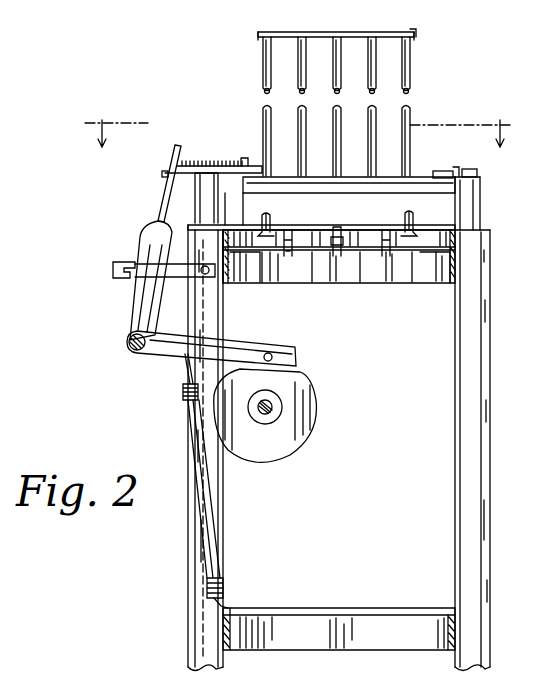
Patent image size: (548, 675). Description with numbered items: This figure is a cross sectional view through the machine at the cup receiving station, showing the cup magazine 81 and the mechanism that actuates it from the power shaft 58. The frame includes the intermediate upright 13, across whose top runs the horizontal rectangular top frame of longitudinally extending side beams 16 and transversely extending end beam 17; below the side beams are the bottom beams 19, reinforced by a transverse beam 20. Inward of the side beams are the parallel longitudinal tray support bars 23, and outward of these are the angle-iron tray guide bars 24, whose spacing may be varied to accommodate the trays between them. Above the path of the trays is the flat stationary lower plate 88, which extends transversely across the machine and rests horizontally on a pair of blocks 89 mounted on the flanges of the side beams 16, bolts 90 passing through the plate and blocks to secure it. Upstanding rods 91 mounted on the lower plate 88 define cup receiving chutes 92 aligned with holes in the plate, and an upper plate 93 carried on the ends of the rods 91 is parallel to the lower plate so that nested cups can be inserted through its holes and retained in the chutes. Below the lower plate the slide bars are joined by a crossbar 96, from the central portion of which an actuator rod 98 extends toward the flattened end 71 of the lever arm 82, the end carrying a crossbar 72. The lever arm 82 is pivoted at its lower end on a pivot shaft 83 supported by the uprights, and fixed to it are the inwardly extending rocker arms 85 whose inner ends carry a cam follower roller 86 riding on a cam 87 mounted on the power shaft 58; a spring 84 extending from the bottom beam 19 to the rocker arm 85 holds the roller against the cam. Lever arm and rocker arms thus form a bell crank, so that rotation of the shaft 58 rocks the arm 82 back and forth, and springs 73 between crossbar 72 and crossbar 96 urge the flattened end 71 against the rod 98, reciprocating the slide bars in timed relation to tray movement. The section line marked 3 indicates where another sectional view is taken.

The section line 3- 3 is at (298, 121).
The intermediate upright 13 is at (458, 460).
The side beam 16 is at (230, 268).
The end beam 17 is at (328, 282).
The bottom beam 19 is at (232, 612).
The transverse beam 20 is at (312, 622).
The tray support bar 23 is at (268, 257).
The tray guide bar 24 is at (268, 220).
The power shaft 58 is at (266, 417).
The flattened end 71 is at (179, 148).
The crossbar 72 is at (163, 174).
The spring 73 is at (238, 165).
The cup magazine 81 is at (258, 33).
The lever arm 82 is at (163, 187).
The pivot shaft 83 is at (128, 346).
The spring 84 is at (186, 410).
The rocker arm 85 is at (231, 343).
The cam follower roller 86 is at (272, 350).
The cam 87 is at (305, 384).
The lower plate 88 is at (450, 173).
The block 89 is at (481, 200).
The bolt 90 is at (476, 171).
The upstanding rod 91 is at (298, 61).
The cup receiving chute 92 is at (276, 86).
The upper plate 93 is at (414, 33).
The crossbar 96 is at (456, 176).
The actuator rod 98 is at (243, 162).